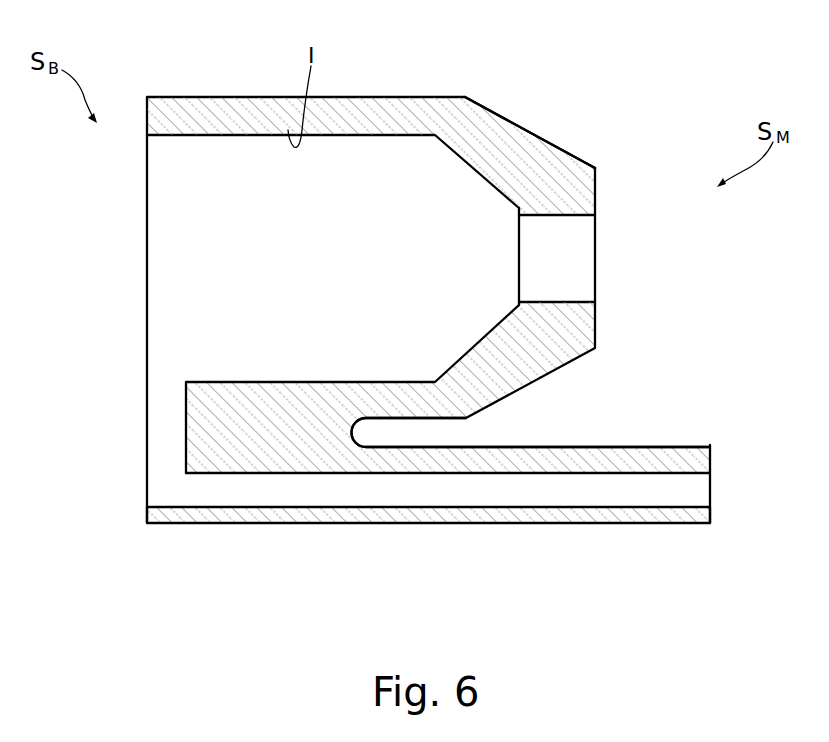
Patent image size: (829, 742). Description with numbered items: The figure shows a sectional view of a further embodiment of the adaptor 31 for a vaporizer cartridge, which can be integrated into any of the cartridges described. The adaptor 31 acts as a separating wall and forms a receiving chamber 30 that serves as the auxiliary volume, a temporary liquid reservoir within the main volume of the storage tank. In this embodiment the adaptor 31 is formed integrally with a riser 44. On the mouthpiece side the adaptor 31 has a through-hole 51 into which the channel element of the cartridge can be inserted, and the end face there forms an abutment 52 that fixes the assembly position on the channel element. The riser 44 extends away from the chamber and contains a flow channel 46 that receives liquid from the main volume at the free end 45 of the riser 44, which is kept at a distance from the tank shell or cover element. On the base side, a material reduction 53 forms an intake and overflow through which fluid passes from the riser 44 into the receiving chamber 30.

The receiving chamber 30 is at (165, 243).
The adaptor 31 is at (558, 93).
The abutment 52 is at (598, 188).
The through-hole 51 is at (582, 262).
The material reduction 53 is at (168, 445).
The flow channel 46 is at (641, 487).
The riser 44 is at (462, 525).
The free end 45 is at (706, 525).